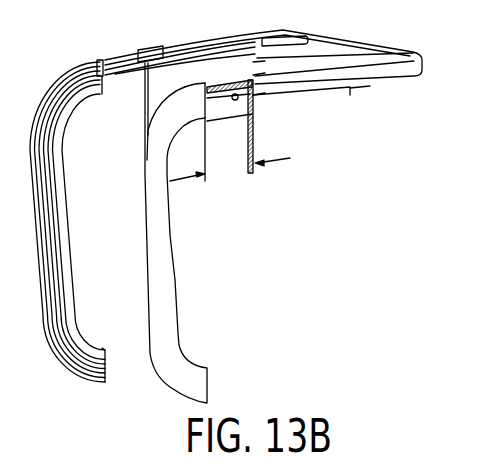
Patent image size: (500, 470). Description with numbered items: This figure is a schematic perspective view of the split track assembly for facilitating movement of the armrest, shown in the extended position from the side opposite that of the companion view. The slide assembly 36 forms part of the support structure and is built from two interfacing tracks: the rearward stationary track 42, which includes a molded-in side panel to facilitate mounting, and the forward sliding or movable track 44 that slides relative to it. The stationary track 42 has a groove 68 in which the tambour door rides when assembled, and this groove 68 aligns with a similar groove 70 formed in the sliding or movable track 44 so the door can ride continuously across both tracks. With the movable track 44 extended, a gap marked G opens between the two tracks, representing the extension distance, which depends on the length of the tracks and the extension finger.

The slide assembly 36 is at (289, 257).
The stationary track 42 is at (50, 268).
The sliding or movable track 44 is at (383, 44).
The groove 68 is at (163, 46).
The groove 70 is at (260, 34).